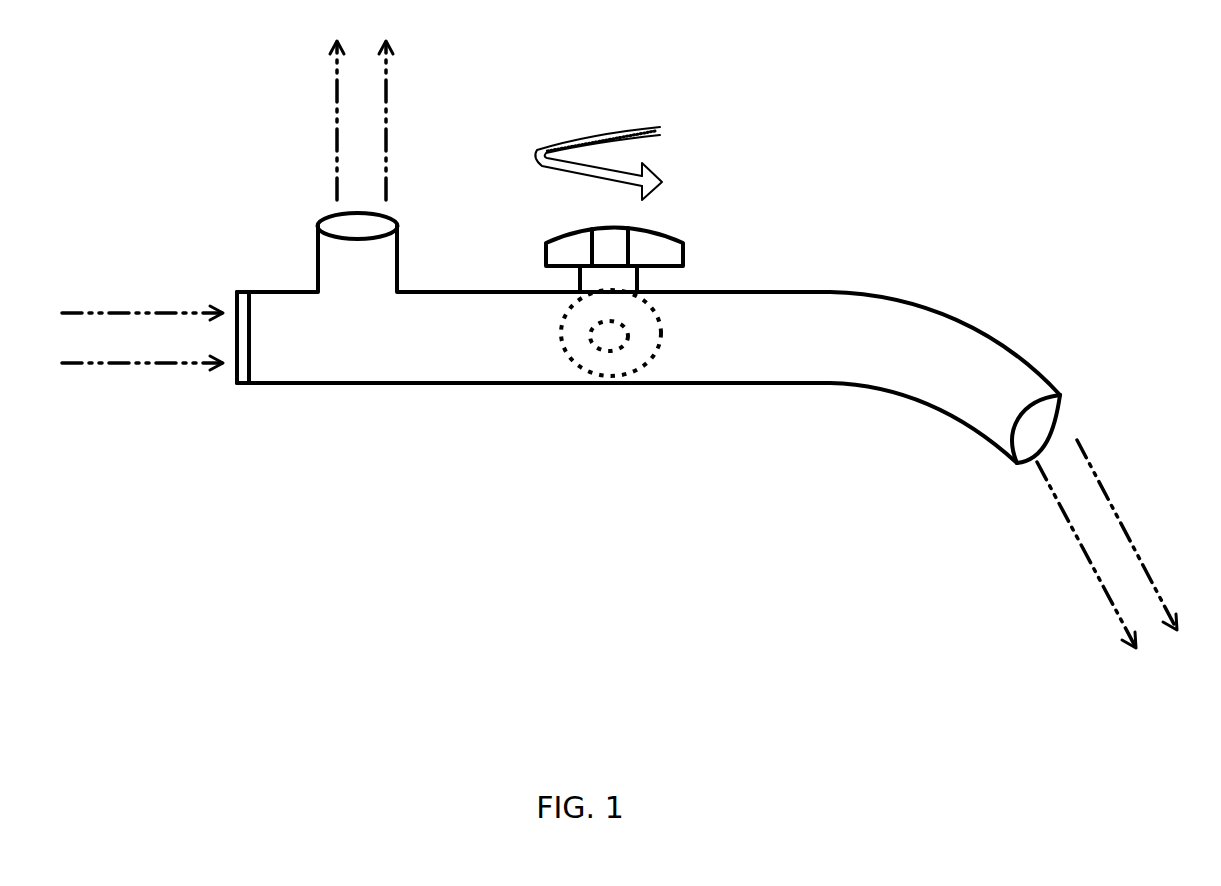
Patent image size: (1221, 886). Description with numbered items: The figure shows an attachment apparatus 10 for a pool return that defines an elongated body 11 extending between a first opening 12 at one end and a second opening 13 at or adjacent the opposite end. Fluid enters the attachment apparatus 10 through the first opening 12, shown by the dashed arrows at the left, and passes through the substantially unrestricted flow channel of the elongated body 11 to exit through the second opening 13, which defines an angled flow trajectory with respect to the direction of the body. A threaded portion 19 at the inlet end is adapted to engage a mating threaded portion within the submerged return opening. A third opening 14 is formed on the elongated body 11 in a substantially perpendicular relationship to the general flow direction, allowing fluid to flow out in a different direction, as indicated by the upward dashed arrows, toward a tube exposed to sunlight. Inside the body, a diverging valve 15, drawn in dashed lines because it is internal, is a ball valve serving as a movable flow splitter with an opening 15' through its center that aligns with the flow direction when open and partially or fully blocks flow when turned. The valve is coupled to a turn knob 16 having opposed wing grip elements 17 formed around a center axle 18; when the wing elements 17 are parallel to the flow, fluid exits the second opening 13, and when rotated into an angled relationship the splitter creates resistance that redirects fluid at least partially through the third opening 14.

The attachment apparatus 10 is at (898, 175).
The elongated body 11 is at (737, 340).
The first opening 12 is at (224, 298).
The second opening 13 is at (1063, 432).
The third opening 14 is at (362, 228).
The diverging valve (ball valve) 15 is at (635, 410).
The opening 15' is at (584, 412).
The turn knob 16 is at (701, 238).
The wing grip elements 17 is at (572, 240).
The center axle 18 is at (598, 275).
The threaded portion 19 is at (248, 365).